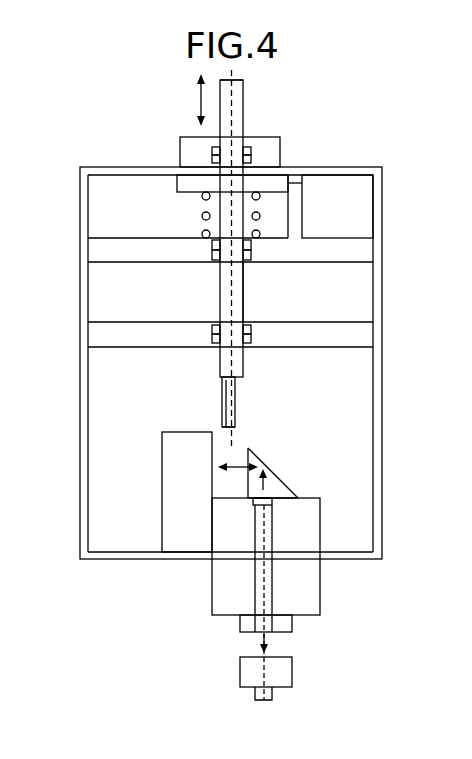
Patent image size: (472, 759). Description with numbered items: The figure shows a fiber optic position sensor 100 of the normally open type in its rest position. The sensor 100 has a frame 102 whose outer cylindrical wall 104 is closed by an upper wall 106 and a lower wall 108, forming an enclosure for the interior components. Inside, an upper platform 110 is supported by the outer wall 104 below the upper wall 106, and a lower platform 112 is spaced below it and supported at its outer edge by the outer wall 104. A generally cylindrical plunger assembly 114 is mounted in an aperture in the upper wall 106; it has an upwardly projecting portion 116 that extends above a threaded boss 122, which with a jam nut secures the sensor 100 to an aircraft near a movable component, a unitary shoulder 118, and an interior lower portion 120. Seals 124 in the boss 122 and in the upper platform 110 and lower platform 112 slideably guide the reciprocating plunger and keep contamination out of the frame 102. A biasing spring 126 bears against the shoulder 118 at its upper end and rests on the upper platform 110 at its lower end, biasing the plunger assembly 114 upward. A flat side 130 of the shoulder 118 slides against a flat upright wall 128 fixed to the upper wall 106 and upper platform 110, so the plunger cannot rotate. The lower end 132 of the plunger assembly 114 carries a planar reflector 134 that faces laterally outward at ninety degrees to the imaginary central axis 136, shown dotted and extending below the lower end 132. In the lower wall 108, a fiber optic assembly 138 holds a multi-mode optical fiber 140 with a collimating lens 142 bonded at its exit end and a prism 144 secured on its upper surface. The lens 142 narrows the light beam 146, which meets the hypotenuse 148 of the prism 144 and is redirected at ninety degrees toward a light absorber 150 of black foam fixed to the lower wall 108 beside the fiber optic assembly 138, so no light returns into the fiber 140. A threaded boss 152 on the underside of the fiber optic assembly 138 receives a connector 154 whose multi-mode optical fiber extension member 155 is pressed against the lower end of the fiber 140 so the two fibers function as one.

The fiber optic position sensor 100 is at (335, 163).
The frame 102 is at (76, 318).
The outer cylindrical wall 104 is at (383, 376).
The upper wall 106 is at (147, 167).
The lower wall 108 is at (130, 560).
The upper platform 110 is at (312, 264).
The lower platform 112 is at (300, 348).
The plunger assembly 114 is at (252, 108).
The upwardly projecting portion 116 is at (247, 86).
The unitary shoulder 118 is at (177, 187).
The interior lower portion 120 is at (243, 290).
The threaded boss 122 is at (185, 137).
The seal 124 is at (250, 140).
The biasing spring 126 is at (202, 215).
The flat upright wall 128 is at (308, 208).
The flat side 130 is at (303, 180).
The lower end 132 is at (220, 397).
The planar reflector 134 is at (236, 400).
The central axis 136 is at (237, 428).
The fiber optic assembly 138 is at (322, 590).
The multi-mode optical fiber 140 is at (273, 592).
The collimating lens 142 is at (298, 491).
The prism 144 is at (283, 473).
The light beam 146 is at (248, 486).
The hypotenuse 148 is at (272, 476).
The light absorber 150 is at (162, 493).
The threaded boss 152 is at (240, 622).
The connector 154 is at (292, 672).
The multi-mode optical fiber extension member 155 is at (272, 693).